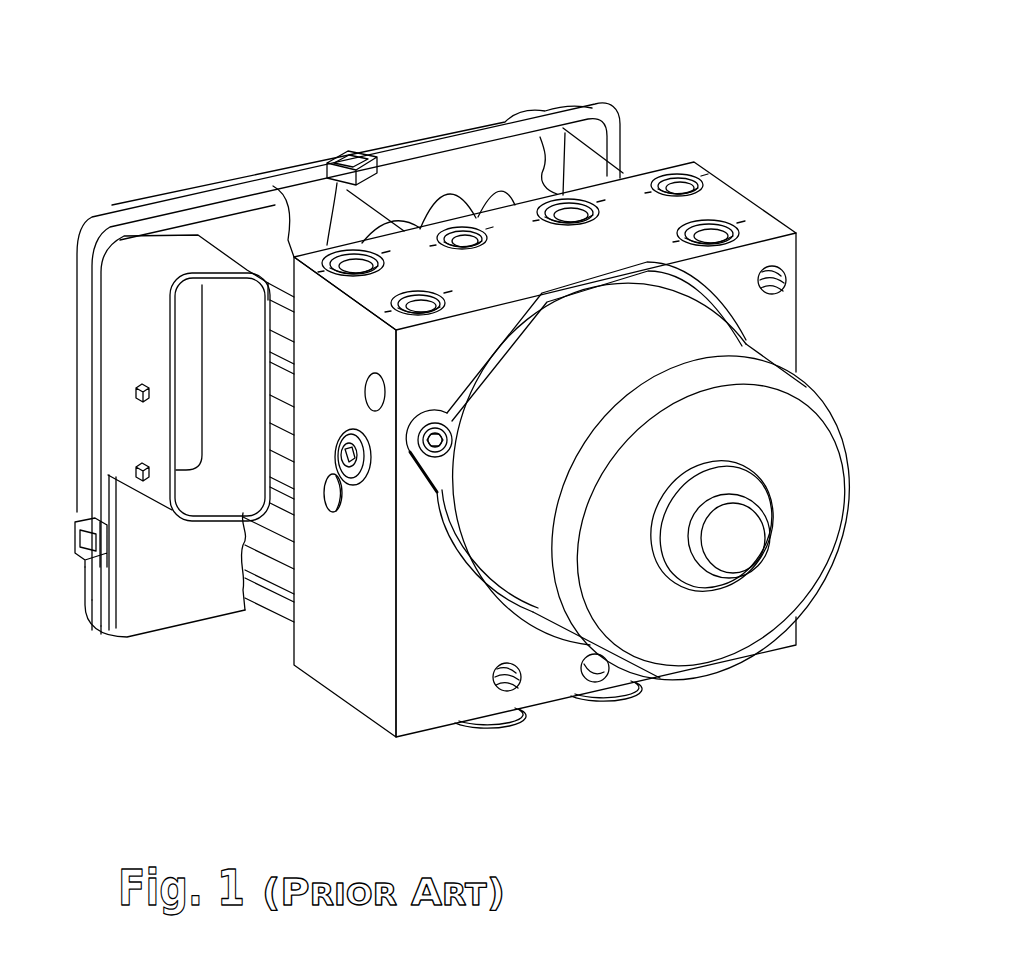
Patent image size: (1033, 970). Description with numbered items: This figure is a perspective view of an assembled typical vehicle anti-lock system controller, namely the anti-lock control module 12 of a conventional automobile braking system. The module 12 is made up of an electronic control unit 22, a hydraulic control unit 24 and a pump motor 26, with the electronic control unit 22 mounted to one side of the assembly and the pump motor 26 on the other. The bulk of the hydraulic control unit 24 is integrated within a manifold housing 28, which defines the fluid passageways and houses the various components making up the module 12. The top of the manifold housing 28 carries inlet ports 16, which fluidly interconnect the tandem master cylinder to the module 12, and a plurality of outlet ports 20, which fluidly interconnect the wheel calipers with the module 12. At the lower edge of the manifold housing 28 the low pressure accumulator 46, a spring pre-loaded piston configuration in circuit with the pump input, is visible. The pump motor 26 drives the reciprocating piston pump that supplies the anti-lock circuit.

The anti-lock control module 12 is at (351, 122).
The inlet port 16 is at (718, 230).
The outlet port 20 is at (340, 254).
The electronic control unit 22 is at (128, 213).
The hydraulic control unit 24 is at (338, 658).
The pump motor 26 is at (808, 440).
The manifold housing 28 is at (425, 713).
The low pressure accumulator 46 is at (503, 723).